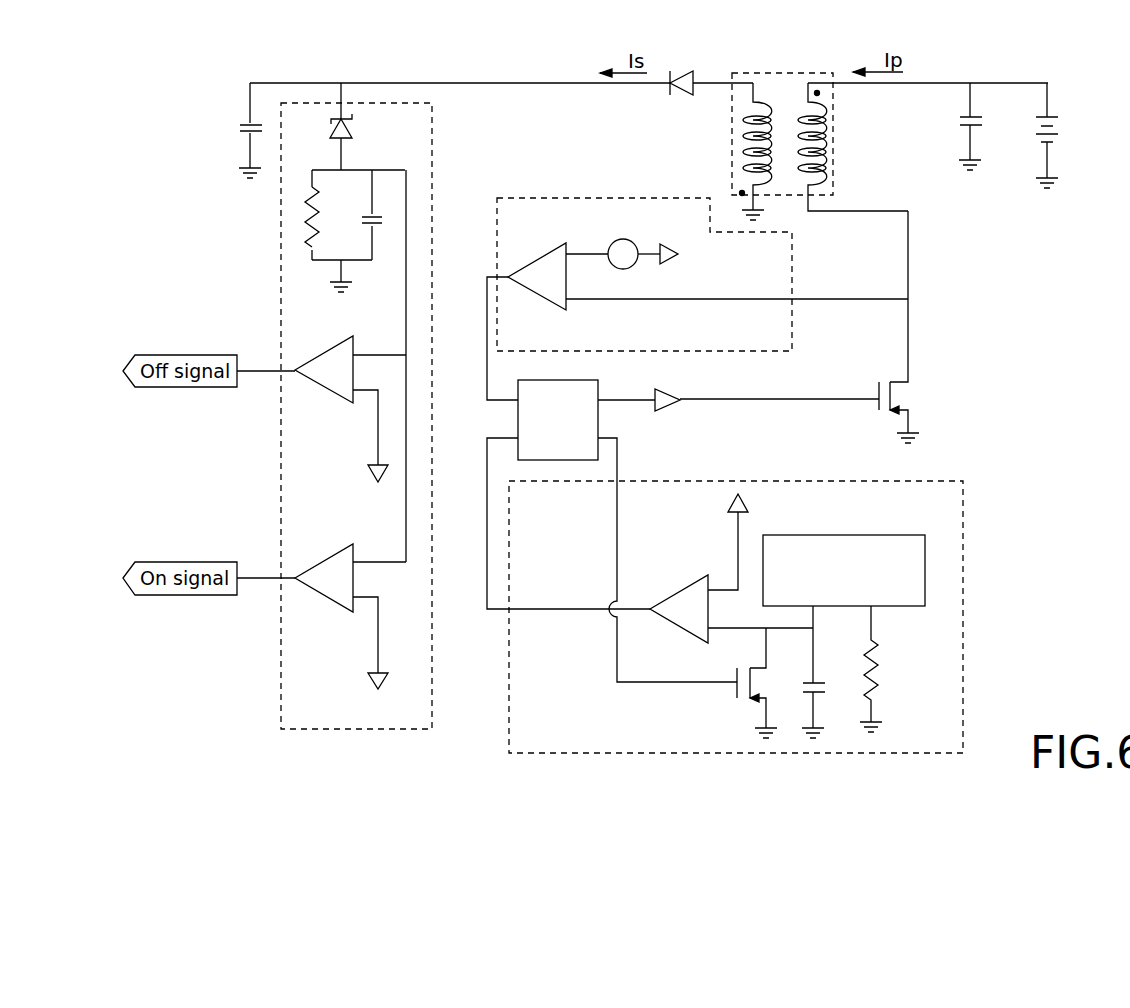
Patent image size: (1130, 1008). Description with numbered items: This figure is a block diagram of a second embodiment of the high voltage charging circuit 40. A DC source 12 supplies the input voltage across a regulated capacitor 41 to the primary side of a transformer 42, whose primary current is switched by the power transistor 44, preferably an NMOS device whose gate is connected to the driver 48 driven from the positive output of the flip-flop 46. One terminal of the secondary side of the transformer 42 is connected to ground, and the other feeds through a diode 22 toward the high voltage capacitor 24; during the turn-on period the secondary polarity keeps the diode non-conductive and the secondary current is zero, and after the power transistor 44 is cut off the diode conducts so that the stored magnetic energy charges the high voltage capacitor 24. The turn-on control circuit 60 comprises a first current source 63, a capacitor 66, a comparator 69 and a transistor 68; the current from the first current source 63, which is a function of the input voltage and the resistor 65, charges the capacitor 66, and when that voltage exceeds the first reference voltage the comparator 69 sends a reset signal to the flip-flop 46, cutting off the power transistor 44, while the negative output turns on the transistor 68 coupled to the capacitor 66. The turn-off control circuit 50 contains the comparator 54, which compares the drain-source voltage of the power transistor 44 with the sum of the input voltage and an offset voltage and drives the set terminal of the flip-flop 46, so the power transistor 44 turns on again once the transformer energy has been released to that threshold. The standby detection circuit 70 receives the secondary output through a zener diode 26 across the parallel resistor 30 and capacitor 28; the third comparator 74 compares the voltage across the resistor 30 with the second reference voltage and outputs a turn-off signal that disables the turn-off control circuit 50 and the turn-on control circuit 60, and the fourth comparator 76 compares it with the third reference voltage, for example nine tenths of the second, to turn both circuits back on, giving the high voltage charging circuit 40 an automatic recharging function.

The DC source 12 is at (1057, 130).
The diode 22 is at (687, 65).
The high voltage capacitor 24 is at (245, 124).
The zener diode 26 is at (355, 128).
The capacitor 28 is at (385, 212).
The resistor 30 is at (300, 228).
The high voltage charging circuit 40 is at (1100, 66).
The capacitor 41 is at (978, 128).
The transformer 42 is at (785, 90).
The power transistor 44 is at (912, 398).
The flip-flop 46 is at (598, 389).
The driver 48 is at (680, 392).
The turn-off control circuit 50 is at (792, 258).
The comparator 54 is at (545, 250).
The turn-on control circuit 60 is at (963, 560).
The first current source 63 is at (905, 607).
The resistor 65 is at (882, 690).
The capacitor 66 is at (820, 690).
The transistor 68 is at (739, 700).
The comparator 69 is at (683, 586).
The standby detection circuit 70 is at (315, 730).
The third comparator 74 is at (336, 396).
The fourth comparator 76 is at (336, 604).